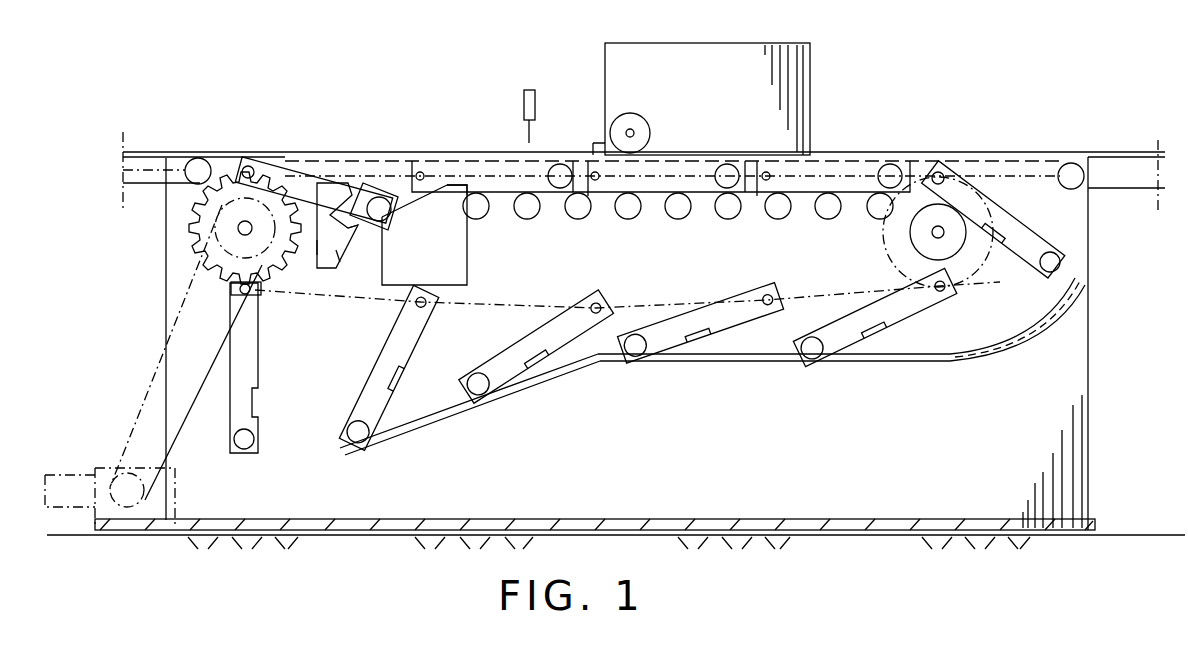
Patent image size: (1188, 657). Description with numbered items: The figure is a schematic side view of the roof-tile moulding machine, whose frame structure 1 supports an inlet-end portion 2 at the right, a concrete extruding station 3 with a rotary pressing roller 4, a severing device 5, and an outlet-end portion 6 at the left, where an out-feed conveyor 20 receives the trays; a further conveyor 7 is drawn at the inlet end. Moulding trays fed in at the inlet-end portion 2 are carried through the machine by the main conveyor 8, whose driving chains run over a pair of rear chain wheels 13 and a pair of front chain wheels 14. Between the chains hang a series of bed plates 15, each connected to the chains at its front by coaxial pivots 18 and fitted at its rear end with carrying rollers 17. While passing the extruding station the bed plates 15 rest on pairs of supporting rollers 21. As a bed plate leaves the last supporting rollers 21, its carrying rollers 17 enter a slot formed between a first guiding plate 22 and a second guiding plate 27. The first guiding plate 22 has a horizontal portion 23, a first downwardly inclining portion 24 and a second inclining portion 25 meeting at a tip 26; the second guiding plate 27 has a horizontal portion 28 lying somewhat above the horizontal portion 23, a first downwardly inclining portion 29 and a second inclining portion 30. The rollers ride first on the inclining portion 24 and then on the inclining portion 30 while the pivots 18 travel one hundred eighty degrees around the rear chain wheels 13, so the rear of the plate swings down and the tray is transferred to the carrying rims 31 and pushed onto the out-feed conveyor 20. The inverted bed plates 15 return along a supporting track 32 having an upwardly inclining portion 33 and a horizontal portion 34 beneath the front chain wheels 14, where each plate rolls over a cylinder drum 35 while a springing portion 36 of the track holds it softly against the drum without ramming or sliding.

The frame structure 1 is at (345, 508).
The inlet-end portion 2 is at (1117, 167).
The concrete extruding station 3 is at (690, 42).
The rotary pressing roller 4 is at (651, 124).
The severing device 5 is at (521, 111).
The outlet-end portion 6 is at (159, 173).
The outlet conveyor 7 is at (1138, 190).
The main conveyor 8 is at (858, 157).
The rear chain wheels 13 is at (193, 251).
The front chain wheels 14 is at (929, 238).
The bed plate 15 is at (293, 185).
The carrying rollers 17 is at (393, 232).
The pivots 18 is at (247, 166).
The out-feed conveyor 20 is at (140, 186).
The supporting rollers 21 is at (630, 211).
The first guiding plate 22 is at (448, 199).
The horizontal portion 23 is at (450, 185).
The first downwardly inclining portion 24 is at (420, 195).
The second inclining portion 25 is at (367, 283).
The tip 26 is at (359, 237).
The second guiding plate 27 is at (318, 251).
The horizontal portion 28 is at (363, 184).
The first downwardly inclining portion 29 is at (340, 204).
The second inclining portion 30 is at (337, 263).
The carrying rims 31 is at (298, 151).
The supporting track 32 is at (620, 383).
The upwardly inclining portion 33 is at (432, 425).
The horizontal portion 34 is at (708, 365).
The cylinder drum 35 is at (918, 232).
The springing portion 36 is at (1038, 322).